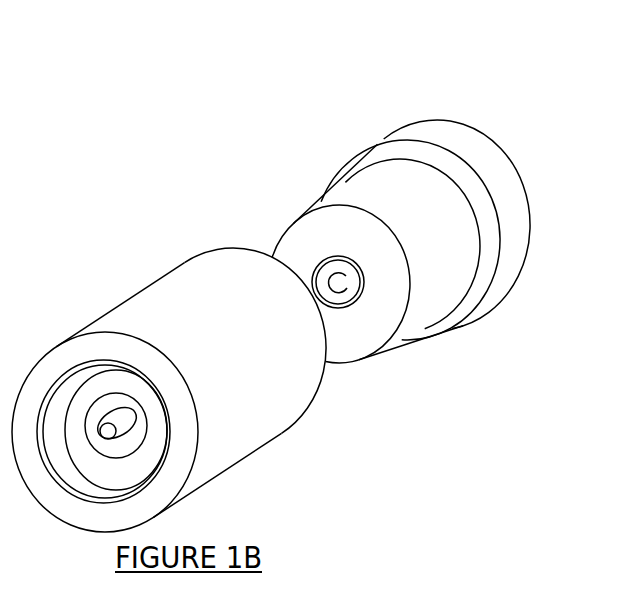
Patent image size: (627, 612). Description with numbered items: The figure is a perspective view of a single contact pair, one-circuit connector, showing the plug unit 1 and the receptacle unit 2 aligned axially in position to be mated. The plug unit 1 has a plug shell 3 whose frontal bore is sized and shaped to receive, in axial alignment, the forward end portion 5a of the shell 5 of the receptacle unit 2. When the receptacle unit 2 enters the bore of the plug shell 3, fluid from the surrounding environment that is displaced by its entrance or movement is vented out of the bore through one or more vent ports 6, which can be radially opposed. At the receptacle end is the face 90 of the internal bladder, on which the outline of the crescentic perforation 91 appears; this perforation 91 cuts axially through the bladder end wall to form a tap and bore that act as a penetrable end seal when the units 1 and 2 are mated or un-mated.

The plug unit 1 is at (180, 252).
The receptacle unit 2 is at (342, 150).
The plug shell 3 is at (267, 418).
The shell 5 is at (455, 138).
The forward end portion 5a is at (442, 285).
The vent ports 6 is at (137, 300).
The face 90 is at (317, 277).
The perforation 91 is at (353, 297).